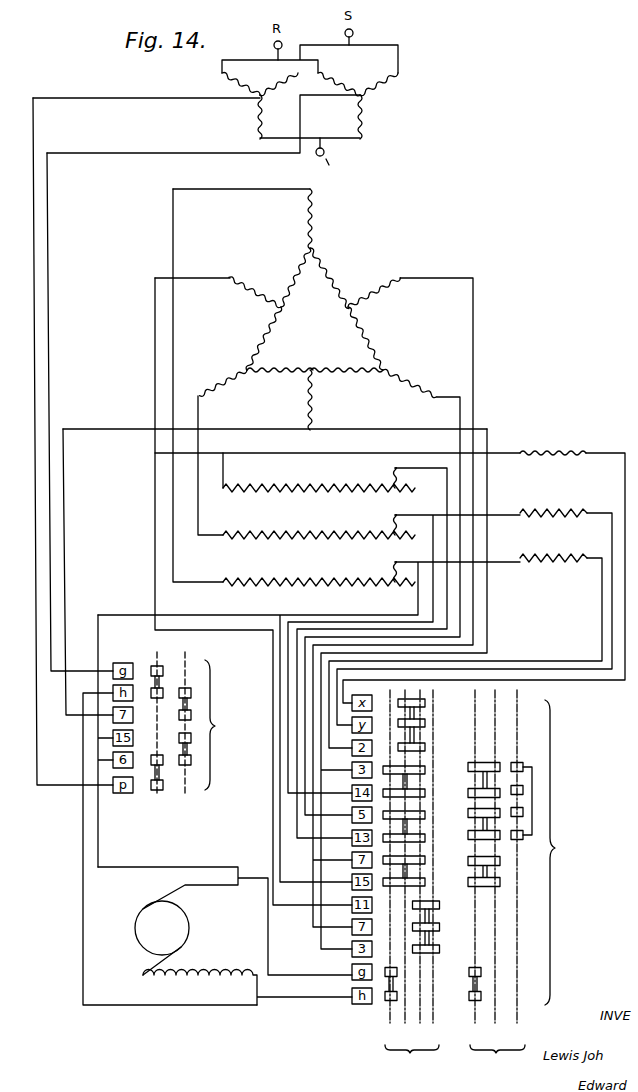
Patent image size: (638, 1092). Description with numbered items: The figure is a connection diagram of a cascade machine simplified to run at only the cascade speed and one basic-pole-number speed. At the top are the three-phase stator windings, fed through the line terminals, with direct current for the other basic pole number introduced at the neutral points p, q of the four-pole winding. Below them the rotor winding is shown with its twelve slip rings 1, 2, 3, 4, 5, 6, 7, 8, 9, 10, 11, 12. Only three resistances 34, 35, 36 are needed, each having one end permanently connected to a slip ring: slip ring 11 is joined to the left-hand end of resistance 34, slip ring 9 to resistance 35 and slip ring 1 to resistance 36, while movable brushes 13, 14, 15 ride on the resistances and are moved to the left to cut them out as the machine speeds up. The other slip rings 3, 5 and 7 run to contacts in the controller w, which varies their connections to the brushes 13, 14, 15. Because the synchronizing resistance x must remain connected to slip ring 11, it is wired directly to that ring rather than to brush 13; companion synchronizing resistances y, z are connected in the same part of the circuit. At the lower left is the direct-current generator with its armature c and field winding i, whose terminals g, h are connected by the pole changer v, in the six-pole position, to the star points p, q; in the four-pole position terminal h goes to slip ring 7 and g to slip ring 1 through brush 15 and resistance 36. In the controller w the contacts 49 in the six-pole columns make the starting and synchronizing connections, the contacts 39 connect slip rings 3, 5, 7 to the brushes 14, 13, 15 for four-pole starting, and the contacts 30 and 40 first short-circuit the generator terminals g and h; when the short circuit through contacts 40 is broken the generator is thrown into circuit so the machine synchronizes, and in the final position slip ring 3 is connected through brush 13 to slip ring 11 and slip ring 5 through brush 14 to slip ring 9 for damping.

The slip ring 1 is at (305, 219).
The slip ring 2 is at (329, 278).
The slip ring 3 is at (393, 601).
The slip ring 4 is at (365, 338).
The slip ring 5 is at (382, 590).
The slip ring 6 is at (347, 380).
The slip ring 7 is at (318, 400).
The slip ring 8 is at (280, 380).
The slip ring 9 is at (223, 385).
The slip ring 10 is at (264, 338).
The slip ring 11 is at (218, 293).
The slip ring 12 is at (295, 277).
The brush 13 is at (372, 650).
The brush 14 is at (404, 651).
The brush 15 is at (309, 719).
The resistance 34 is at (345, 484).
The resistance 35 is at (345, 531).
The resistance 36 is at (345, 578).
The controller contacts 39 is at (433, 946).
The short-circuit contacts 40 is at (469, 972).
The controller contacts 49 is at (425, 706).
The controller contacts 30 is at (397, 975).
The neutral point p is at (309, 92).
The neutral point q is at (223, 112).
The synchronizing resistance x is at (484, 567).
The synchronizing resistance y is at (474, 606).
The synchronizing resistance z is at (465, 642).
The pole changer v is at (188, 716).
The controller w is at (477, 882).
The generator terminal g is at (225, 921).
The generator terminal h is at (254, 961).
The generator field winding i is at (247, 978).
The generator armature c is at (135, 943).